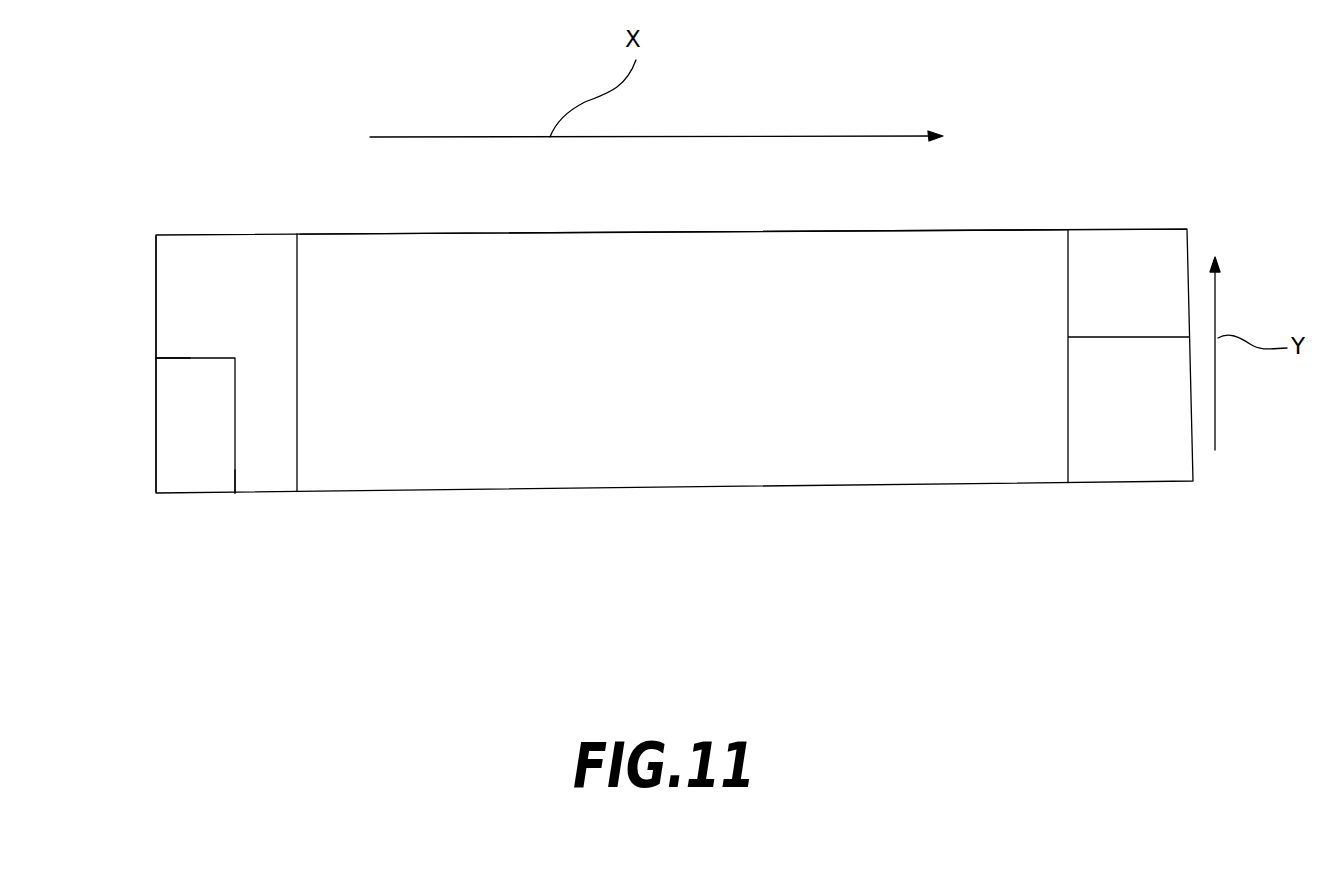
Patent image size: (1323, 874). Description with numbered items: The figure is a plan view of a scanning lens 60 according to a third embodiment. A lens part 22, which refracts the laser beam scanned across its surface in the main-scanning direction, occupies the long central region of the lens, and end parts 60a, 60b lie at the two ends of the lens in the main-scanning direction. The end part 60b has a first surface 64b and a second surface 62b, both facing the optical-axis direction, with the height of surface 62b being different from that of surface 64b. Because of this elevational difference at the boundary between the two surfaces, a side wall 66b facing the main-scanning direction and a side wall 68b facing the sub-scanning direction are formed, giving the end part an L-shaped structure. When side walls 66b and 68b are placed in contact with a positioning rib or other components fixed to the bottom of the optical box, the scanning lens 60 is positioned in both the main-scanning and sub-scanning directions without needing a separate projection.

The scanning lens 60 is at (991, 550).
The lens part 22 is at (782, 250).
The end part 60a is at (1125, 212).
The end part 60b is at (192, 222).
The surface (second surface) 62b is at (183, 450).
The surface (first surface) 64b is at (282, 458).
The side wall 66b is at (234, 472).
The side wall 68b is at (184, 358).